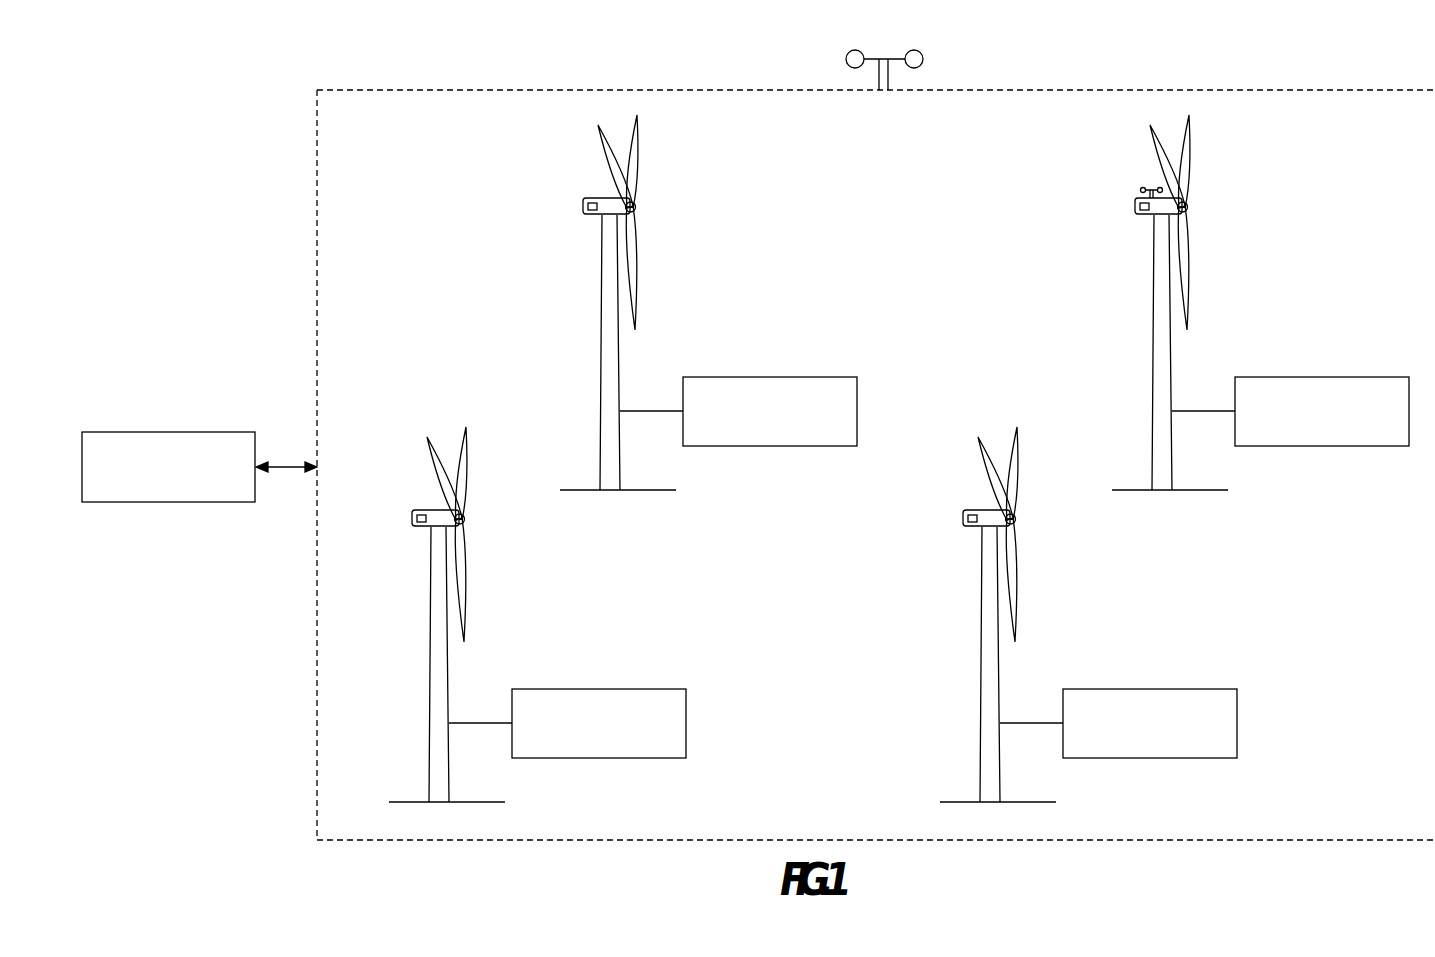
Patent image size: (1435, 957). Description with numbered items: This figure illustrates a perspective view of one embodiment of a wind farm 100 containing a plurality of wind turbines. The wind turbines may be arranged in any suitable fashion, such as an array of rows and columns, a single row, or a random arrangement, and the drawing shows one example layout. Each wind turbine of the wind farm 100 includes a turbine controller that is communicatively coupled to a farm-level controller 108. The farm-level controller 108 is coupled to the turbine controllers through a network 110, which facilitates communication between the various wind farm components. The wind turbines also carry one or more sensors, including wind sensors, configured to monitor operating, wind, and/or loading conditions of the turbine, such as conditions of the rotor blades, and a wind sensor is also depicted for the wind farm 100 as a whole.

The wind farm 100 is at (201, 150).
The farm-level controller 108 is at (148, 432).
The network 110 is at (283, 460).